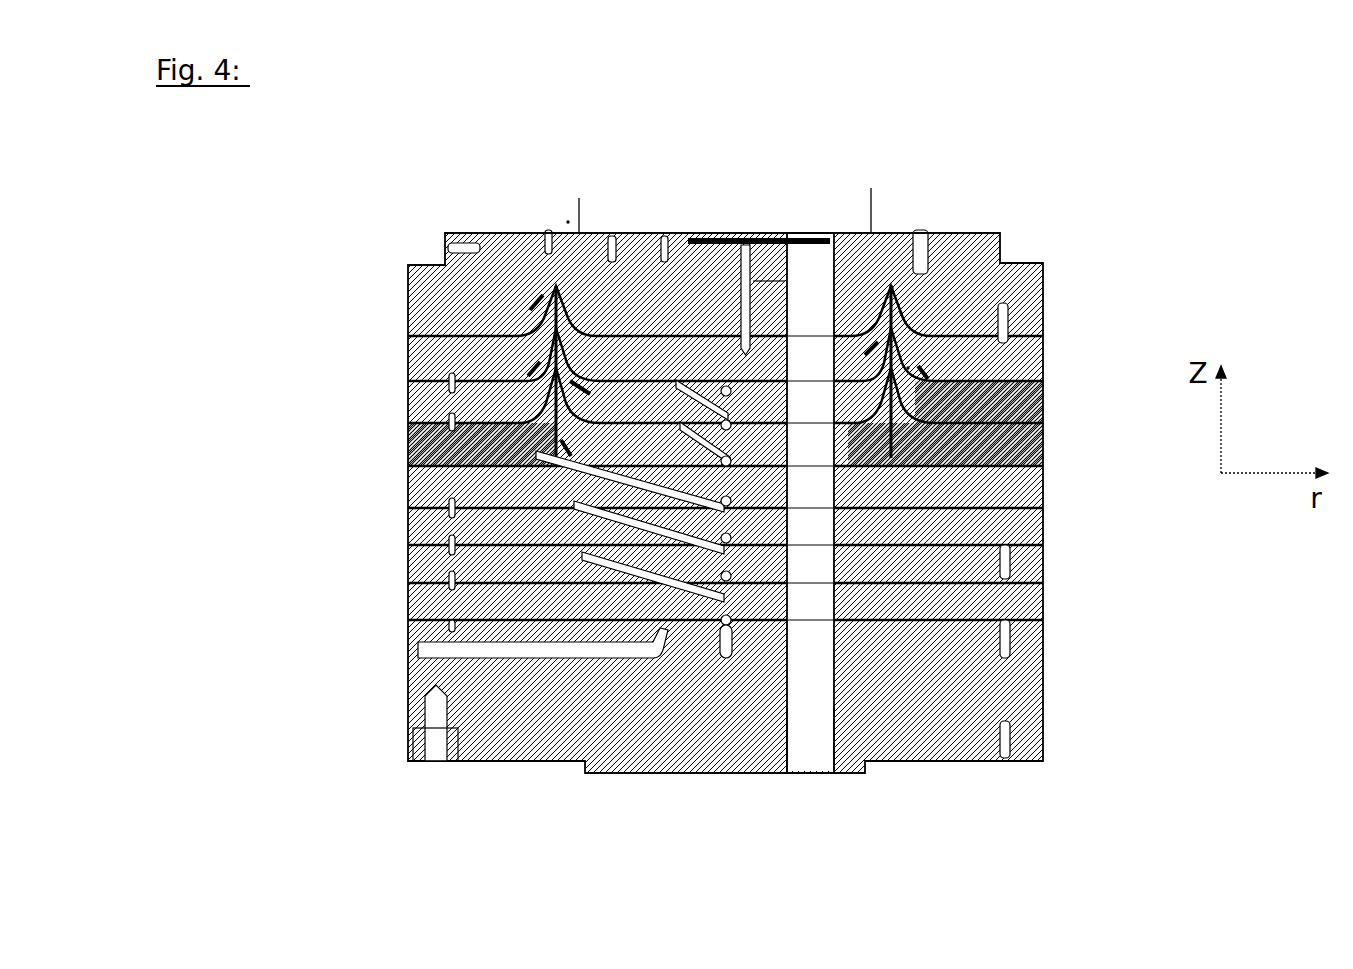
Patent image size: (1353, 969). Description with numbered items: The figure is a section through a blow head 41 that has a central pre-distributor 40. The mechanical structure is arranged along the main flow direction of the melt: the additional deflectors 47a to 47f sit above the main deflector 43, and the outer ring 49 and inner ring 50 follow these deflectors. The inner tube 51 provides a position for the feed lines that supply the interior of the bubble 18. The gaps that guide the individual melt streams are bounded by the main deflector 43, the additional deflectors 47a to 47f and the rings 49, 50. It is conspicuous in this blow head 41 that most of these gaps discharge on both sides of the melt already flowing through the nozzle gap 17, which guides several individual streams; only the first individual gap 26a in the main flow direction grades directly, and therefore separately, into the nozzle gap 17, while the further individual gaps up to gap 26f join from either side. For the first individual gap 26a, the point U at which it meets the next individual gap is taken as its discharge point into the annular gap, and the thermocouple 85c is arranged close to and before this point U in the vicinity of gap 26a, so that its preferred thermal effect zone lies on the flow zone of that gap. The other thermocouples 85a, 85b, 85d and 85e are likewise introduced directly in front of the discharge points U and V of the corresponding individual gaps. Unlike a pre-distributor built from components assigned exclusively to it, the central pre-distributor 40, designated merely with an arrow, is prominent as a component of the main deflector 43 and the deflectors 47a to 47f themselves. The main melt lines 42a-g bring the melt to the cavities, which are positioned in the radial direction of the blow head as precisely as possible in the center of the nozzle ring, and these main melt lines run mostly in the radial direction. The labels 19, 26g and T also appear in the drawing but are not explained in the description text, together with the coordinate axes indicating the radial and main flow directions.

The nozzle gap 17 is at (878, 255).
The bubble 18 is at (573, 193).
The mold parting region 19 is at (554, 205).
The first individual gap 26a is at (875, 425).
The individual gap 26f is at (572, 300).
The mold plate recess 26g is at (437, 257).
The central pre-distributor 40 is at (550, 418).
The blow head 41 is at (1090, 258).
The main melt lines 42a-g is at (433, 640).
The main deflector 43 is at (1035, 675).
The additional deflector 47a is at (1035, 592).
The additional deflector 47f is at (917, 415).
The outer ring 49 is at (495, 225).
The inner ring 50 is at (840, 257).
The inner tube 51 is at (810, 727).
The thermocouple 85a is at (533, 290).
The thermocouple 85b is at (522, 365).
The thermocouple 85c is at (545, 428).
The thermocouple 85d is at (922, 366).
The thermocouple 85e is at (905, 337).
The point T is at (885, 280).
The point U is at (900, 360).
The point V is at (893, 305).